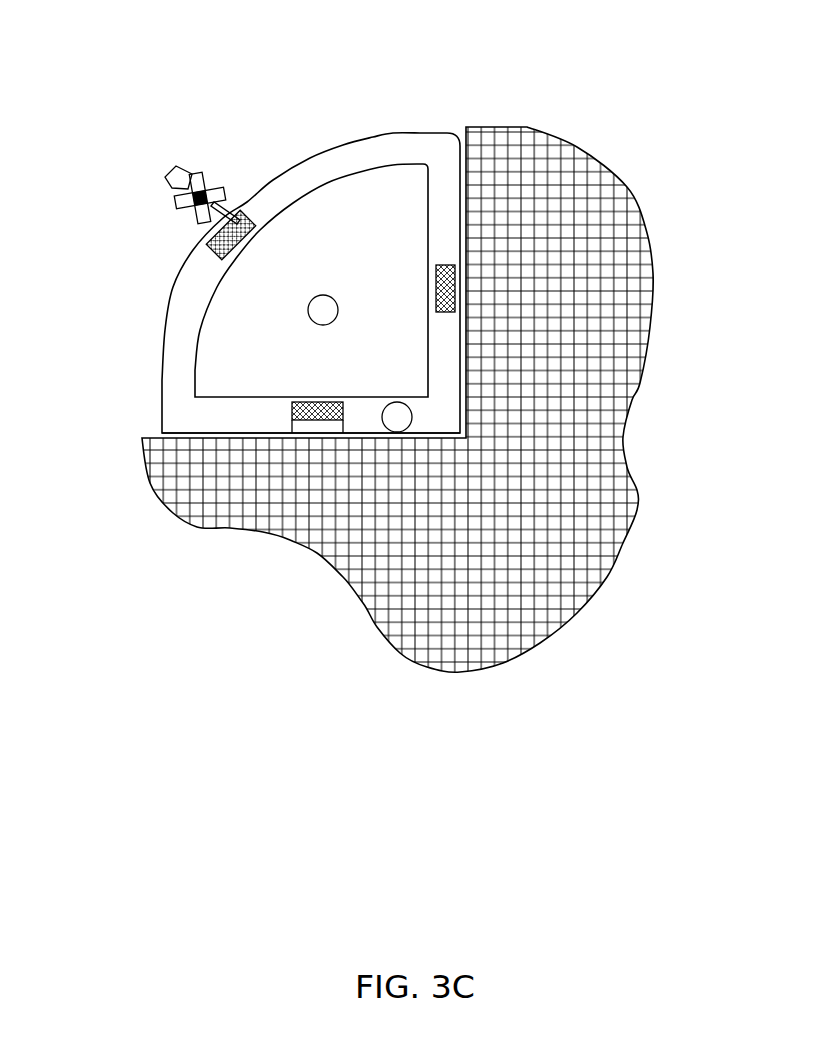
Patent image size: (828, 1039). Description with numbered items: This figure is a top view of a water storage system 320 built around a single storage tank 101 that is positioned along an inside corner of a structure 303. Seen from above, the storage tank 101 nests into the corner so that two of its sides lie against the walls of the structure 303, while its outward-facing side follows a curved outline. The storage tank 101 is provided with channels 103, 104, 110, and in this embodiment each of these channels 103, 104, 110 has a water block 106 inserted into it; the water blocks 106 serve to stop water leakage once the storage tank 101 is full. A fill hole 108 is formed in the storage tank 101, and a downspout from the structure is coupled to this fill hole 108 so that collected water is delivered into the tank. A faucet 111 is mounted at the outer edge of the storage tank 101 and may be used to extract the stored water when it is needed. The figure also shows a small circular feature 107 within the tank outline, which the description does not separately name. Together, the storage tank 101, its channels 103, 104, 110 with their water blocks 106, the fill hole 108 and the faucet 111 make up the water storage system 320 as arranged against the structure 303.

The storage tank 101 is at (298, 157).
The channel 103 is at (433, 303).
The channel 104 is at (310, 423).
The water block 106 is at (213, 242).
The pivot 107 is at (328, 290).
The fill hole 108 is at (402, 412).
The channel 110 is at (238, 213).
The faucet 111 is at (170, 177).
The structure 303 is at (580, 150).
The water storage system 320 is at (260, 688).